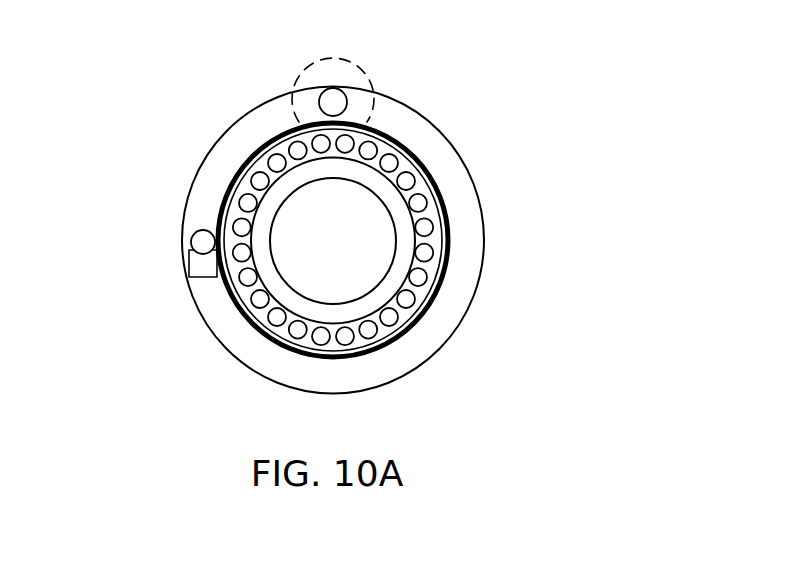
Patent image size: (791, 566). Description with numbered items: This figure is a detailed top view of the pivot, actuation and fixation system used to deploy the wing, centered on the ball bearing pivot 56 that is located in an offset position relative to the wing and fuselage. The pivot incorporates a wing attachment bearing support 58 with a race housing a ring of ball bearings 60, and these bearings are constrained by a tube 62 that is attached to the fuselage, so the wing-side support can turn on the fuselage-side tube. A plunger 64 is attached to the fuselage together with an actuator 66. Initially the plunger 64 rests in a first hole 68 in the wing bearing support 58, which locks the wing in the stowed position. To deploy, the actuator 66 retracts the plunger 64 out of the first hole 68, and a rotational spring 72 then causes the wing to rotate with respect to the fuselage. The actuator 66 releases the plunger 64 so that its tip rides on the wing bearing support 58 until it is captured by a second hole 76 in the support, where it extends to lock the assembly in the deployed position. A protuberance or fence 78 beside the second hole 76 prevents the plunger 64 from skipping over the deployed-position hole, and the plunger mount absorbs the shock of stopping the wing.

The ball bearing pivot 56 is at (480, 134).
The wing attachment bearing support 58 is at (484, 218).
The ball bearings 60 is at (425, 248).
The tube 62 is at (412, 282).
The plunger 64 is at (333, 102).
The actuator 66 is at (362, 73).
The first hole 68 is at (343, 141).
The rotational spring 72 is at (290, 300).
The second hole 76 is at (192, 230).
The protuberance or fence 78 is at (210, 262).